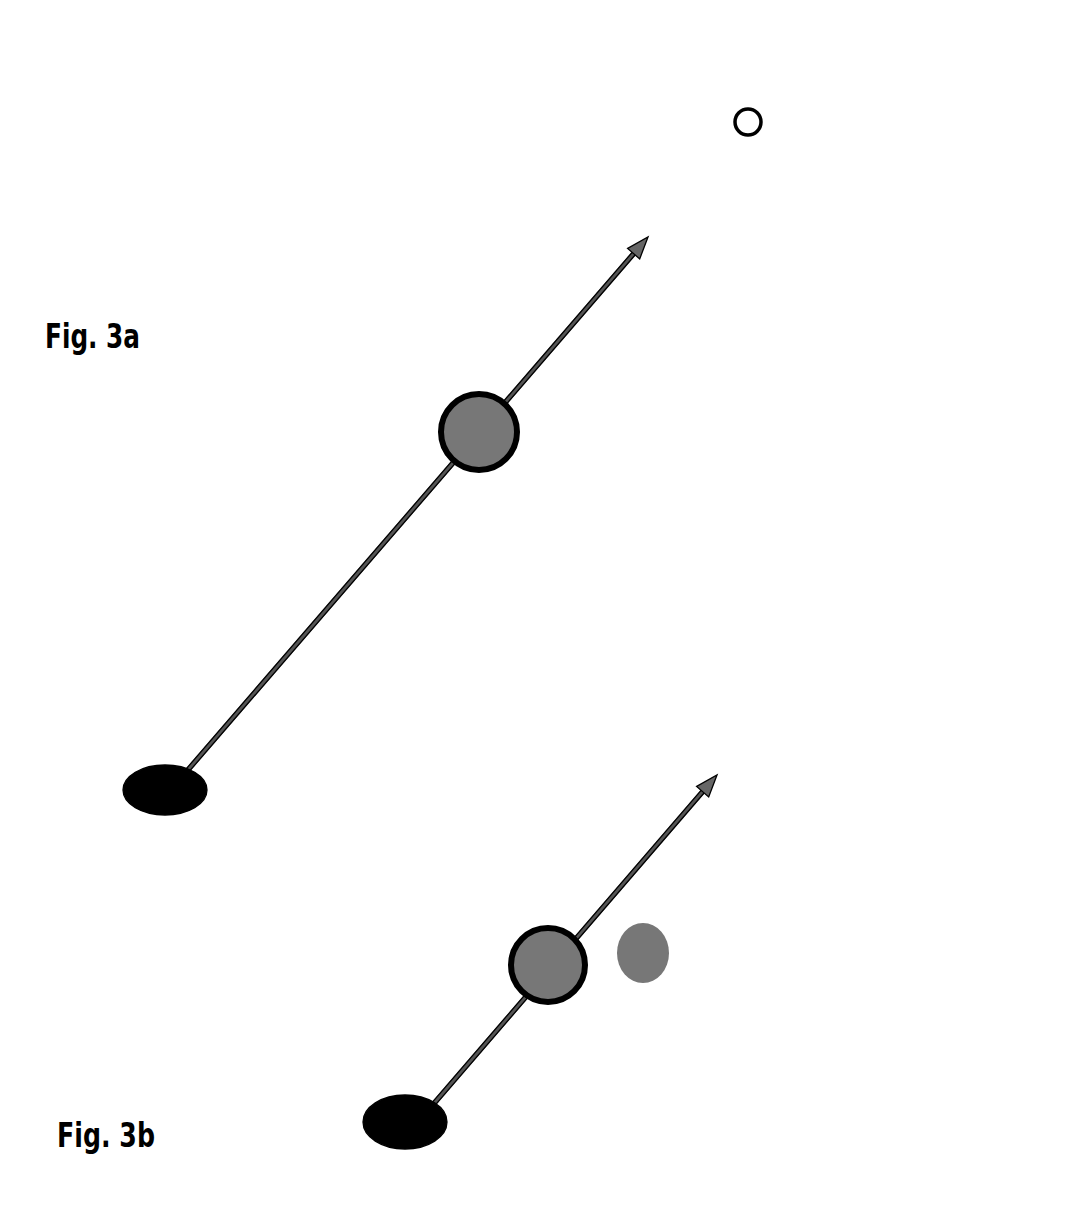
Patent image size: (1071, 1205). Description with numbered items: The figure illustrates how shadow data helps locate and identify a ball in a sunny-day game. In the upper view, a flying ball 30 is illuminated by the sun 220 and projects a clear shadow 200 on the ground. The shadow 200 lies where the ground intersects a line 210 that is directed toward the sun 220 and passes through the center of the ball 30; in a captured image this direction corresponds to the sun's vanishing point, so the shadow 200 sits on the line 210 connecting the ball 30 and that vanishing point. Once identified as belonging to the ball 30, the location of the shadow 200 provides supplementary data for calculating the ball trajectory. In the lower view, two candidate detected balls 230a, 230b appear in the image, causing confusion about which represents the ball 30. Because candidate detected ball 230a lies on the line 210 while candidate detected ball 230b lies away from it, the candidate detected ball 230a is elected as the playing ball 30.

In FIG. 3A, the flying ball 30 is at (452, 403).
In FIG. 3A, the shadow 200 is at (145, 765).
In FIG. 3B, the shadow 200 is at (385, 1097).
In FIG. 3A, the line 210 is at (577, 313).
In FIG. 3B, the line 210 is at (647, 853).
In FIG. 3A, the sun 220 is at (740, 107).
In FIG. 3B, the candidate detected ball 230a is at (560, 1005).
In FIG. 3B, the candidate detected ball 230b is at (658, 978).